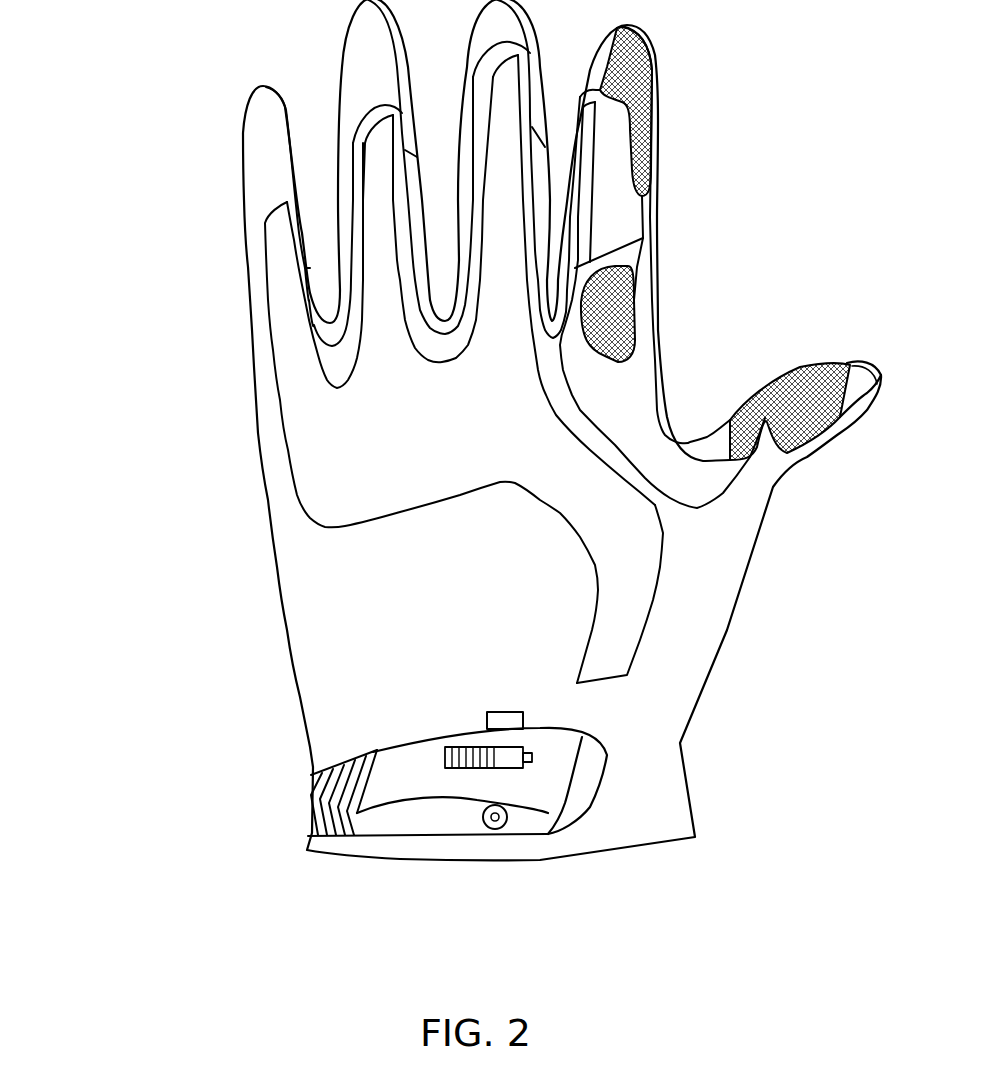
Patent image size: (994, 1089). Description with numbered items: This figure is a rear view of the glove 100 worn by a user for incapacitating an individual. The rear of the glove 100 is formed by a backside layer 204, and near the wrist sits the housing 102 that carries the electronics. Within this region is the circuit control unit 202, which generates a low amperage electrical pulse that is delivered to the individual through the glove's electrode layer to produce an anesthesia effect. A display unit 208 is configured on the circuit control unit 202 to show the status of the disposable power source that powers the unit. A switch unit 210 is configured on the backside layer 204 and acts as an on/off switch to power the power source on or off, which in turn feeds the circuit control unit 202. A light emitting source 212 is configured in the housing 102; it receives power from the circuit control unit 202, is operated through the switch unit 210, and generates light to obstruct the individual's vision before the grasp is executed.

The glove 100 is at (203, 106).
The housing 102 is at (695, 710).
The circuit control unit 202 is at (583, 812).
The backside layer 204 is at (687, 643).
The display unit 208 is at (443, 758).
The switch unit 210 is at (486, 818).
The light emitting source 212 is at (487, 713).